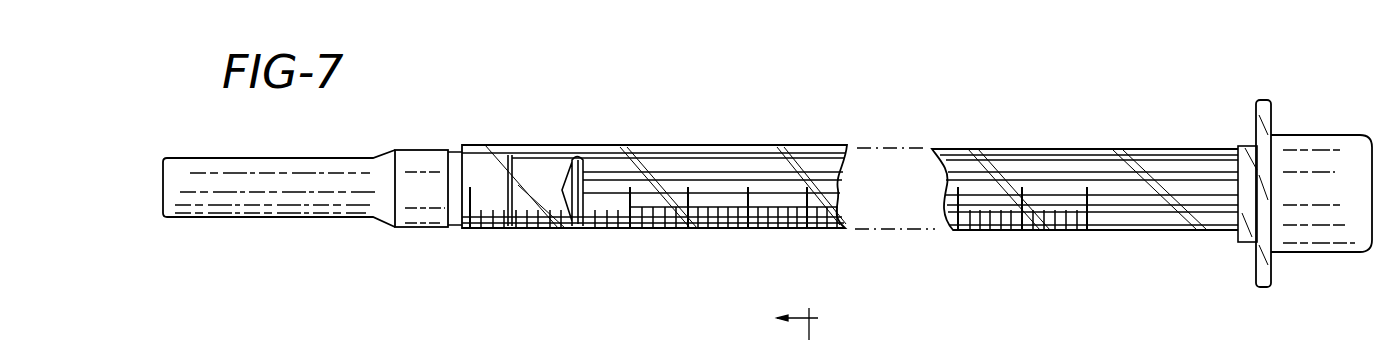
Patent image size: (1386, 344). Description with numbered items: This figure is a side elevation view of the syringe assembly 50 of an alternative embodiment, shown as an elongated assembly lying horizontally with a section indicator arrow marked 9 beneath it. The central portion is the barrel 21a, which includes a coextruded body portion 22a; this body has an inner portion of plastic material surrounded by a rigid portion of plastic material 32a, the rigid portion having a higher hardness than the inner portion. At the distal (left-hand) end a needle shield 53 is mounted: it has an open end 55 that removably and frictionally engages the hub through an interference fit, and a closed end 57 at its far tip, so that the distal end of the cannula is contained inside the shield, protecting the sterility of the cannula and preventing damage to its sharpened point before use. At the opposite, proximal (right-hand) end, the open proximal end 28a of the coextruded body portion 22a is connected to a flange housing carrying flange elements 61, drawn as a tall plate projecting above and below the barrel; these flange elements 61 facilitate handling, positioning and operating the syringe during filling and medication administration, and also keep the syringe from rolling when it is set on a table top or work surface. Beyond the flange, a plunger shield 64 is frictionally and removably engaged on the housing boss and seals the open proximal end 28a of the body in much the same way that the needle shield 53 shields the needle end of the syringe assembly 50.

The closed end 57 is at (180, 158).
The needle shield 53 is at (303, 158).
The open end 55 is at (427, 229).
The barrel 21a is at (558, 146).
The rigid portion of plastic material 32a is at (541, 229).
The coextruded body portion 22a is at (584, 229).
The syringe assembly 50 is at (828, 108).
The open proximal end 28a is at (1198, 233).
The flange elements 61 is at (1273, 115).
The plunger shield 64 is at (1332, 253).
The section line 9 is at (806, 322).